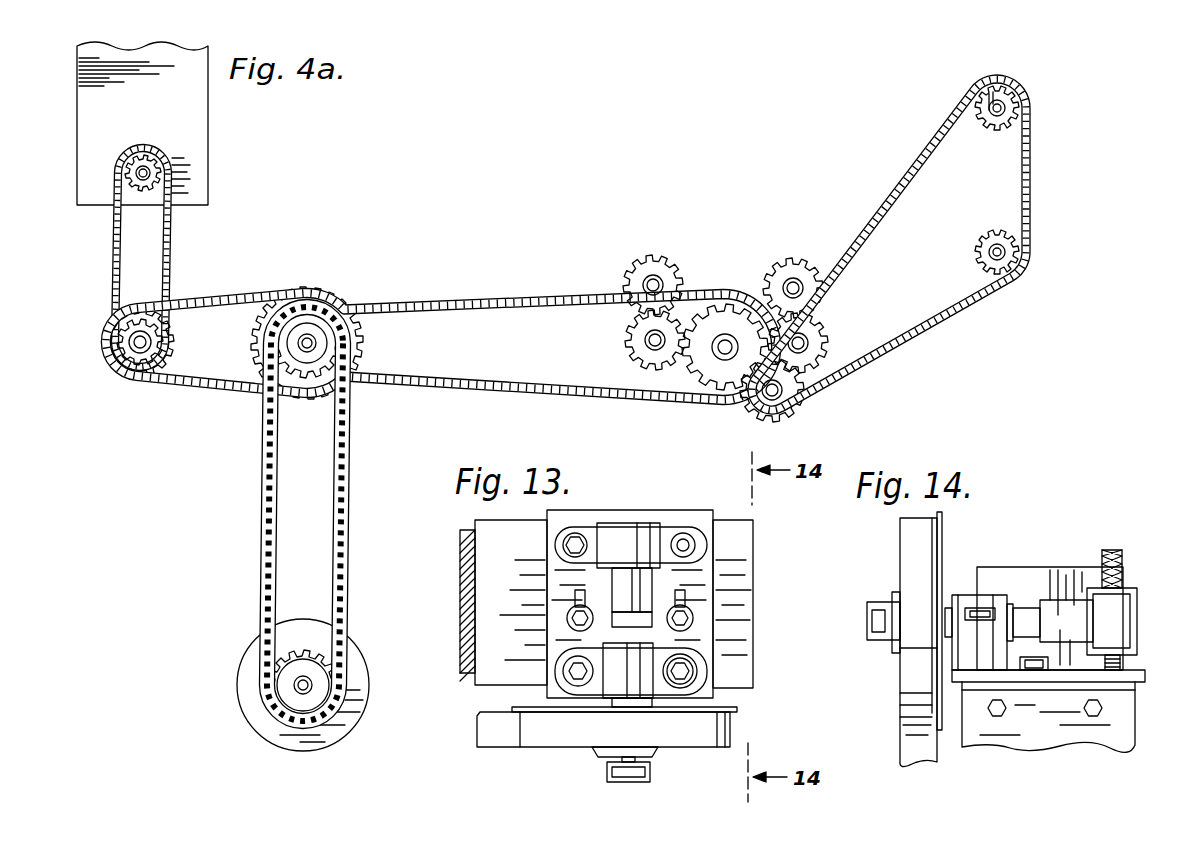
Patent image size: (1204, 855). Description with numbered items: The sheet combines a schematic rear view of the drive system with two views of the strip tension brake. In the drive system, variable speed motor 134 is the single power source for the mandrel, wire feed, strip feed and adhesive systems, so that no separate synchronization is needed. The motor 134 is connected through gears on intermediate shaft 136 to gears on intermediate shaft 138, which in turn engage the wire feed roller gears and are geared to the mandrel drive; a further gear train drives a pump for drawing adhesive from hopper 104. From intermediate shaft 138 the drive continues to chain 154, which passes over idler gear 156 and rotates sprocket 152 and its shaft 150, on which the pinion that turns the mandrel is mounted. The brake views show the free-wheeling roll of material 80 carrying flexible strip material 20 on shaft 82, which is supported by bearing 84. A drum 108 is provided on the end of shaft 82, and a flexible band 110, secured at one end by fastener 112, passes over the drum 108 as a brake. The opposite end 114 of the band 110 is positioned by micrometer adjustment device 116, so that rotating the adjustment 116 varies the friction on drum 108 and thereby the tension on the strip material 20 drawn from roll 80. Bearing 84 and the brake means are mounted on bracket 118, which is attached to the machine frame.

In FIG. 4A, the hopper 104 is at (196, 163).
In FIG. 4A, the intermediate shaft 136 is at (309, 340).
In FIG. 4A, the intermediate shaft 138 is at (725, 345).
In FIG. 4A, the variable speed motor 134 is at (357, 707).
In FIG. 4A, the shaft 150 is at (1005, 108).
In FIG. 4A, the sprocket 152 is at (1000, 95).
In FIG. 4A, the chain 154 is at (1028, 200).
In FIG. 4A, the idler gear 156 is at (1005, 268).
In FIG. 13, the bolt 112 is at (570, 530).
In FIG. 13, the flexible band 110 is at (606, 545).
In FIG. 13, the drum 108 is at (627, 522).
In FIG. 14, the drum 108 is at (1135, 622).
In FIG. 13, the opposite end of band 114 is at (690, 530).
In FIG. 13, the shaft 82 is at (642, 627).
In FIG. 14, the shaft 82 is at (1028, 616).
In FIG. 13, the bearing 84 is at (640, 677).
In FIG. 14, the bearing 84 is at (985, 598).
In FIG. 13, the free-wheeling roll of material 80 is at (730, 728).
In FIG. 14, the free-wheeling roll of material 80 is at (905, 692).
In FIG. 13, the flexible strip material 20 is at (492, 732).
In FIG. 14, the flexible strip material 20 is at (905, 737).
In FIG. 14, the micrometer adjustment device 116 is at (1113, 550).
In FIG. 14, the bracket 118 is at (1035, 728).